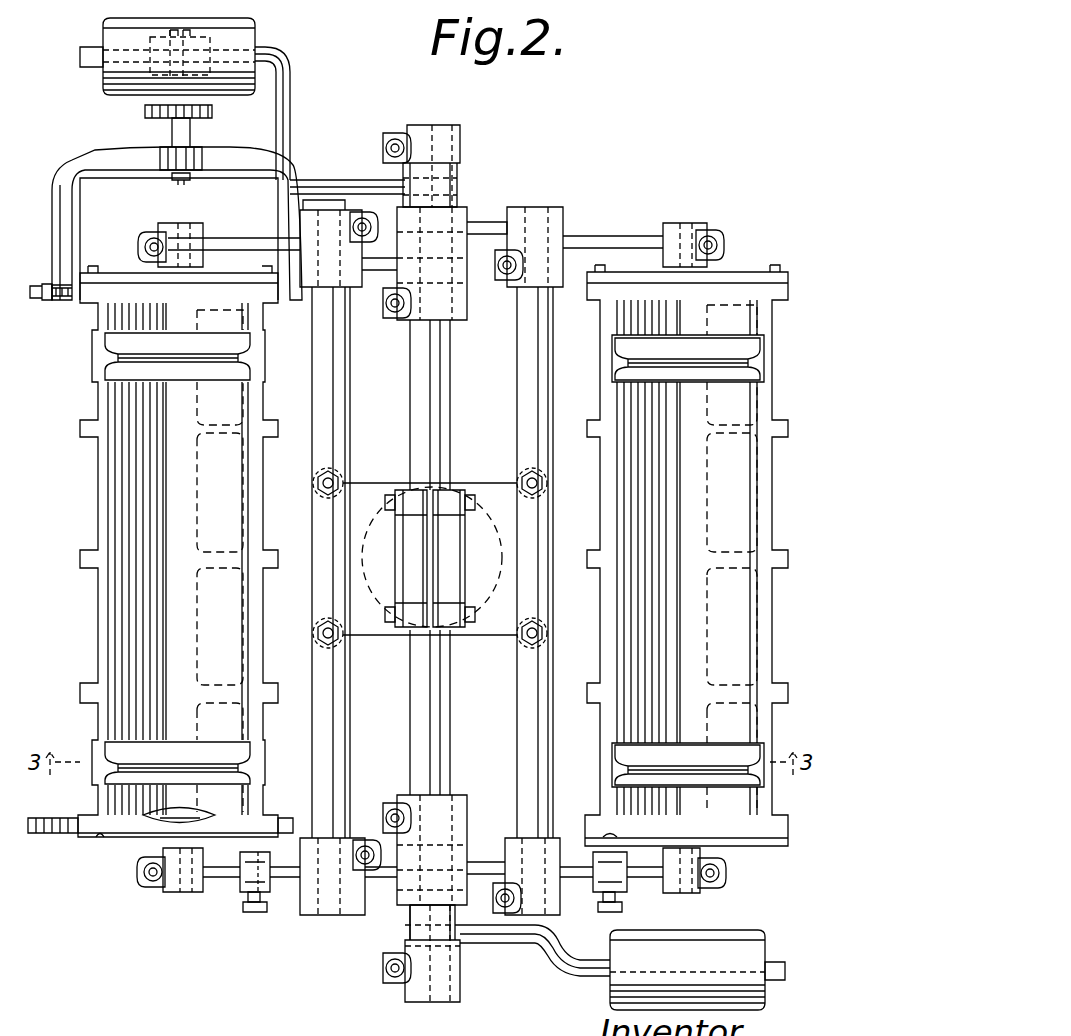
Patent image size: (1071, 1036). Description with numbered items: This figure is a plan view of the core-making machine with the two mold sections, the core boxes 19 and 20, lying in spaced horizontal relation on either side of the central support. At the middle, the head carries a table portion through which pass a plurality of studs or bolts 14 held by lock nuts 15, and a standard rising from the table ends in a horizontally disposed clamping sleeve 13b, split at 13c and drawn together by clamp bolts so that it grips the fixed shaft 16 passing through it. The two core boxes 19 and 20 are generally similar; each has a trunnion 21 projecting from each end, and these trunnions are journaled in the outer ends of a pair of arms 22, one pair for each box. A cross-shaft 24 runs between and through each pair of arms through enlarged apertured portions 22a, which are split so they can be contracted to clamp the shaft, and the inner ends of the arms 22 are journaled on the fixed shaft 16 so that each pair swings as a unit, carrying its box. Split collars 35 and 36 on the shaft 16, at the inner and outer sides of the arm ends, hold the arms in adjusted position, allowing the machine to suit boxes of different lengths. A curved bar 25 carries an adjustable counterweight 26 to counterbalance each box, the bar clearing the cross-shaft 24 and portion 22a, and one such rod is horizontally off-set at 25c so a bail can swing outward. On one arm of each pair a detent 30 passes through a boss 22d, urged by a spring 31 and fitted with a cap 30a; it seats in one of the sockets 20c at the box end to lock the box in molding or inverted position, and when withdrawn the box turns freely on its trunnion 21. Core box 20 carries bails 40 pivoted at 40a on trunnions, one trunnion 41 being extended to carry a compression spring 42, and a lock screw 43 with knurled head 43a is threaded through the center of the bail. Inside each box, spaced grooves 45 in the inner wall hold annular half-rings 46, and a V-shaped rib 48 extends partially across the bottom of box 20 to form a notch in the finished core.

The clamping sleeve 13b is at (460, 540).
The split of clamping sleeve 13c is at (438, 485).
The studs or bolts 14 is at (548, 633).
The lock nuts 15 is at (316, 640).
The fixed shaft 16 is at (445, 368).
The core box 19 is at (772, 497).
The core box 20 is at (98, 516).
The sockets 20c is at (101, 845).
The trunnion 21 is at (690, 224).
The arms 22 is at (246, 238).
The enlarged apertured portion 22a is at (563, 210).
The boss 22d is at (270, 892).
The cross-shaft 24 is at (350, 705).
The bar 25 is at (340, 178).
The horizontal off-set 25c is at (276, 46).
The counterweight 26 is at (112, 30).
The detent 30 is at (268, 880).
The cap or head 30a is at (256, 915).
The spring 31 is at (240, 905).
The split collar 35 is at (462, 300).
The split collar 36 is at (462, 136).
The bail 40 is at (96, 155).
The bail pivot 40a is at (72, 305).
The trunnion 41 is at (40, 300).
The spring 42 is at (52, 284).
The lock screw 43 is at (192, 135).
The knurled head 43a is at (212, 110).
The grooves 45 is at (245, 384).
The annular half-ring 46 is at (245, 352).
The V-shaped rib 48 is at (170, 822).